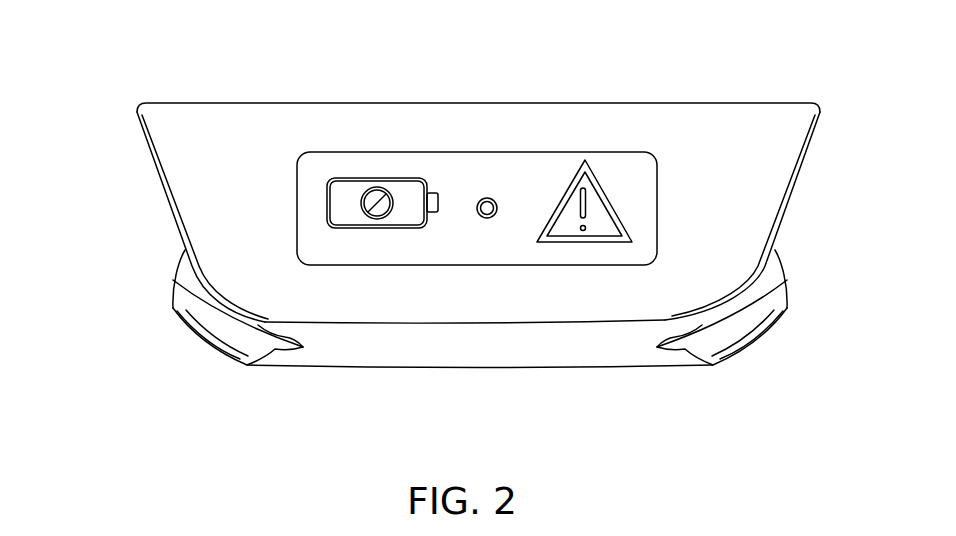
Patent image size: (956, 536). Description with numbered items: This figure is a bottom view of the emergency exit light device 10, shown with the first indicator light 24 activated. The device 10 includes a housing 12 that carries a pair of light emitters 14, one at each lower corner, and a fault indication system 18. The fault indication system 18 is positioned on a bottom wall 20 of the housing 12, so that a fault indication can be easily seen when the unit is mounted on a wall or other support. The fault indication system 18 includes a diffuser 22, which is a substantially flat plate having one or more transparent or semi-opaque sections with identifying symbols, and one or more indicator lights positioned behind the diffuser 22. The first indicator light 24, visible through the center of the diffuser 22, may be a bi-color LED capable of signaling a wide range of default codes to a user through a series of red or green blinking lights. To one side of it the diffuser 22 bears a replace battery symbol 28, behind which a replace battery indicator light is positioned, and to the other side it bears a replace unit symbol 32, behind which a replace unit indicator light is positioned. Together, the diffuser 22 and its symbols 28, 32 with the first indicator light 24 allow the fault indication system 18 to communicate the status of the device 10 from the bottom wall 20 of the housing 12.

The emergency exit light device 10 is at (97, 114).
The housing 12 is at (156, 221).
The light emitters 14 is at (782, 300).
The fault indication system 18 is at (363, 292).
The bottom wall 20 is at (760, 200).
The diffuser 22 is at (515, 248).
The first indicator light 24 is at (487, 198).
The replace battery symbol 28 is at (353, 178).
The replace unit symbol 32 is at (590, 183).